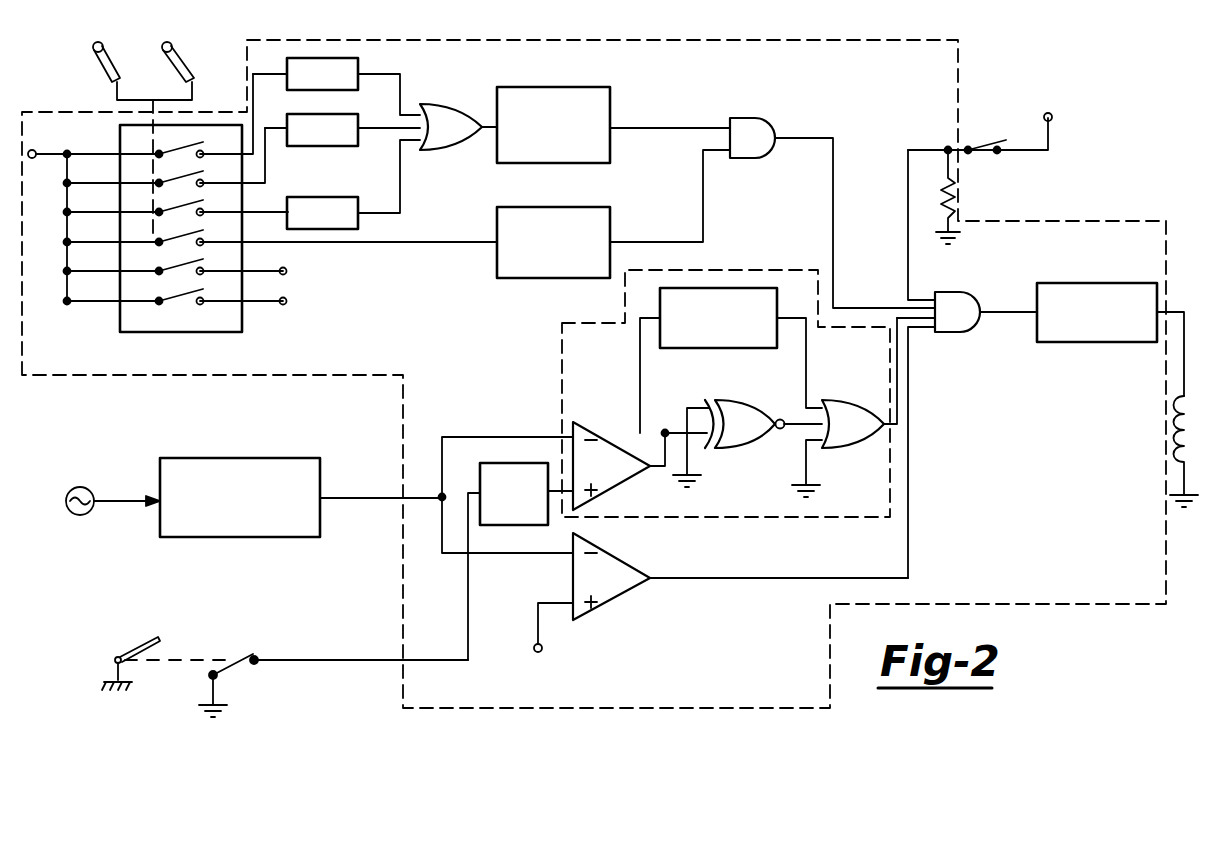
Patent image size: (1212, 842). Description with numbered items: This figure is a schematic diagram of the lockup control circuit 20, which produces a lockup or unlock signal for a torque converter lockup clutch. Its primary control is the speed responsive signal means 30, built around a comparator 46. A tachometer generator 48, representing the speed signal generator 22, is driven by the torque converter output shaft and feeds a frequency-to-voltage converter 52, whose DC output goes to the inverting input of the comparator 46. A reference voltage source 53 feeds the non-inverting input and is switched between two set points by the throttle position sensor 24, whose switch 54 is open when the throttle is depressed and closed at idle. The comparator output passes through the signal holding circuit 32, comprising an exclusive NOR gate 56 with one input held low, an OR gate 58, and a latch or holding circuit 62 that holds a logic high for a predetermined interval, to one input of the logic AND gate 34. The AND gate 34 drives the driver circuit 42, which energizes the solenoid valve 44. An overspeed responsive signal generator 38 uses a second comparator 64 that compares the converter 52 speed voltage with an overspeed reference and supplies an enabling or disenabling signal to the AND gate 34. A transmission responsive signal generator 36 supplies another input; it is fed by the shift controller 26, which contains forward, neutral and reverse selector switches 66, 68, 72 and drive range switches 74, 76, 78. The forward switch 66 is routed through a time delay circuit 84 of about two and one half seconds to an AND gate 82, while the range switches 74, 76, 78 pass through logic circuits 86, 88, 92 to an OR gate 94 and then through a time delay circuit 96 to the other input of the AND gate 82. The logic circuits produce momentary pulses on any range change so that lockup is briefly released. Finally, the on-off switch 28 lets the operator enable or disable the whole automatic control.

The lockup control circuit 20 is at (498, 36).
The speed sensor or signal generator 22 is at (303, 466).
The throttle position sensor 24 is at (285, 647).
The shift controller 26 is at (214, 104).
The on-off switch 28 is at (1000, 116).
The speed responsive signal means 30 is at (574, 448).
The signal holding circuit 32 is at (622, 356).
The logic AND gate 34 is at (892, 292).
The transmission responsive signal generator 36 is at (408, 272).
The overspeed responsive signal generator 38 is at (675, 592).
The driver circuit 42 is at (1080, 283).
The solenoid valve 44 is at (1180, 440).
The comparator 46 is at (542, 416).
The tachometer generator 48 is at (112, 462).
The frequency-to-voltage converter 52 is at (242, 428).
The reference voltage source 53 is at (500, 465).
The switch 54 is at (234, 660).
The exclusive NOR gate 56 is at (758, 380).
The OR gate 58 is at (872, 374).
The latch or holding circuit 62 is at (740, 288).
The comparator 64 is at (606, 558).
The forward selector switch 66 is at (165, 230).
The neutral selector switch 68 is at (165, 259).
The reverse selector switch 72 is at (165, 289).
The drive range switch 74 is at (165, 142).
The drive range switch 76 is at (165, 171).
The drive range switch 78 is at (165, 200).
The AND gate 82 is at (748, 118).
The time delay circuit 84 is at (522, 278).
The logic circuit 86 is at (310, 58).
The logic circuit 88 is at (292, 146).
The logic circuit 92 is at (312, 197).
The OR gate 94 is at (434, 104).
The time delay circuit 96 is at (588, 87).